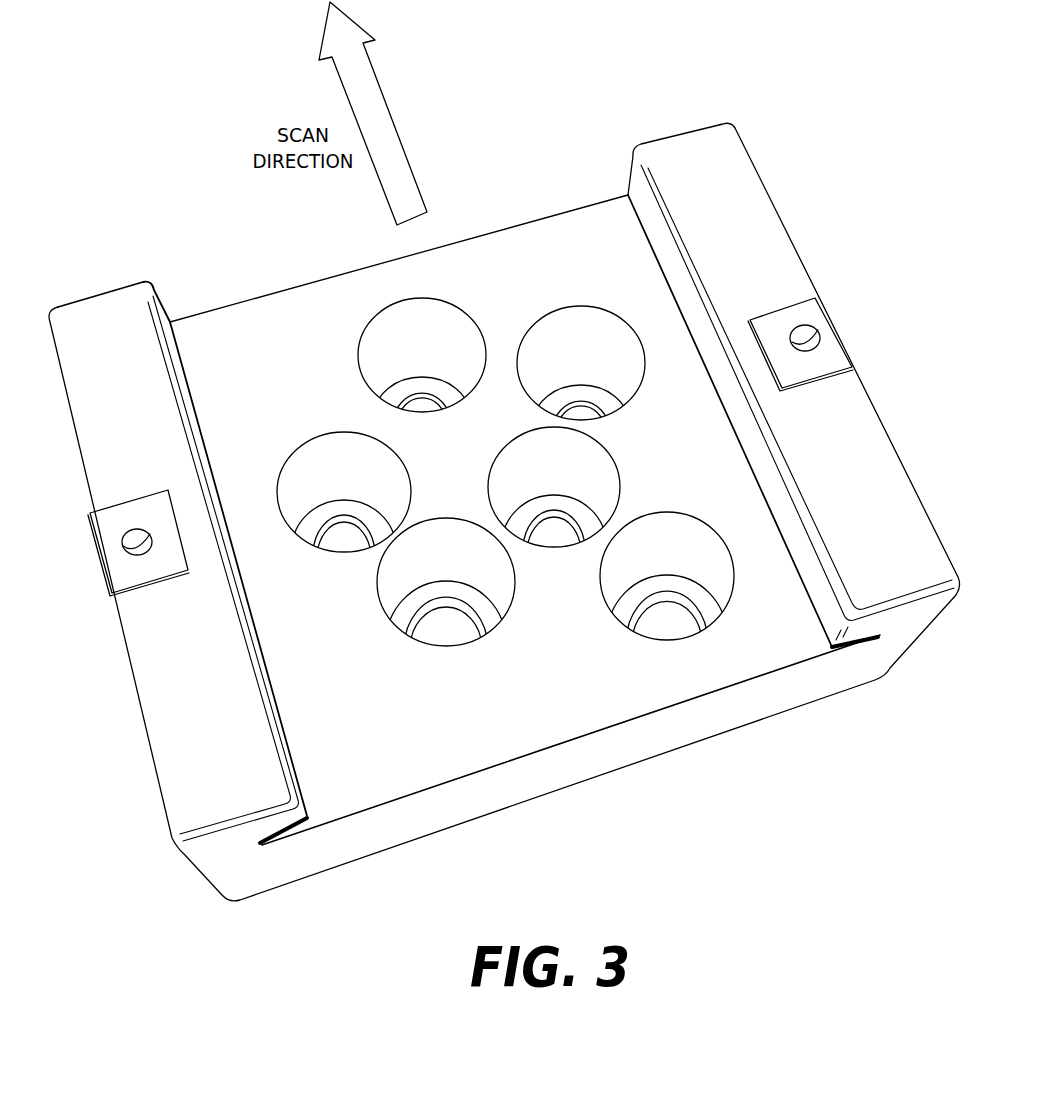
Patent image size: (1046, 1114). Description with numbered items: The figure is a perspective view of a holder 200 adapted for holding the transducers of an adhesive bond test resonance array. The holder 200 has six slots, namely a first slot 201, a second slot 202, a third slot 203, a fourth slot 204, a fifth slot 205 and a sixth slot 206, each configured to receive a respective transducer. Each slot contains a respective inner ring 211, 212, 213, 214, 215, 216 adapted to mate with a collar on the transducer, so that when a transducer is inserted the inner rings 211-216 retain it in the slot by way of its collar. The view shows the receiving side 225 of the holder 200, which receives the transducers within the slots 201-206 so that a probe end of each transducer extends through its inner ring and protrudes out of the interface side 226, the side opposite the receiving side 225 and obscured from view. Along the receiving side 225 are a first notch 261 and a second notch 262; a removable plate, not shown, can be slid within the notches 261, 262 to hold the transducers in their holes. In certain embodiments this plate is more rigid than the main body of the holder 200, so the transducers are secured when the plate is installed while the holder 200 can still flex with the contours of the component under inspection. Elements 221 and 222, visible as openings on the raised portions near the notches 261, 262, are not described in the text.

The holder 200 is at (501, 461).
The first slot 201 is at (317, 462).
The second slot 202 is at (441, 330).
The third slot 203 is at (611, 347).
The fourth slot 204 is at (713, 592).
The fifth slot 205 is at (450, 622).
The sixth slot 206 is at (590, 474).
The inner ring 211 is at (350, 503).
The inner ring 212 is at (413, 384).
The inner ring 213 is at (577, 387).
The inner ring 214 is at (653, 582).
The inner ring 215 is at (443, 590).
The inner ring 216 is at (537, 502).
The mounting hole 221 is at (125, 538).
The mounting hole 222 is at (812, 335).
The receiving side 225 is at (588, 232).
The interface side 226 is at (746, 790).
The first notch 261 is at (217, 562).
The second notch 262 is at (791, 406).